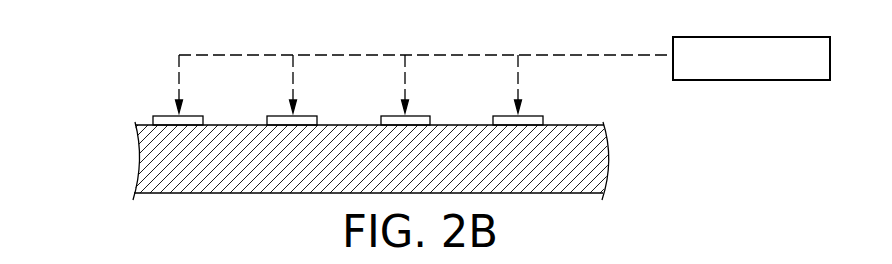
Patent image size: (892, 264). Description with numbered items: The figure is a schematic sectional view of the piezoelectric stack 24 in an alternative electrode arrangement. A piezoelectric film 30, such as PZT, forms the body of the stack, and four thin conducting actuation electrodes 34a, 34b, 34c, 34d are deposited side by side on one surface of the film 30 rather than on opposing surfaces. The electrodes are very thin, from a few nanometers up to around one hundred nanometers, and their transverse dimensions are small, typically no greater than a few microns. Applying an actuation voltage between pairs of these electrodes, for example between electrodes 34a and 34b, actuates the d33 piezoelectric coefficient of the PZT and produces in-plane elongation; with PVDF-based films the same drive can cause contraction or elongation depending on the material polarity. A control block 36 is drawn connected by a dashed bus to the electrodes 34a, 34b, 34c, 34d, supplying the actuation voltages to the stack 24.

The piezoelectric stack 24 is at (443, 114).
The piezoelectric film 30 is at (593, 157).
The actuation electrode 34a is at (194, 123).
The actuation electrode 34b is at (309, 123).
The actuation electrode 34c is at (420, 123).
The actuation electrode 34d is at (535, 123).
The control unit 36 is at (817, 80).